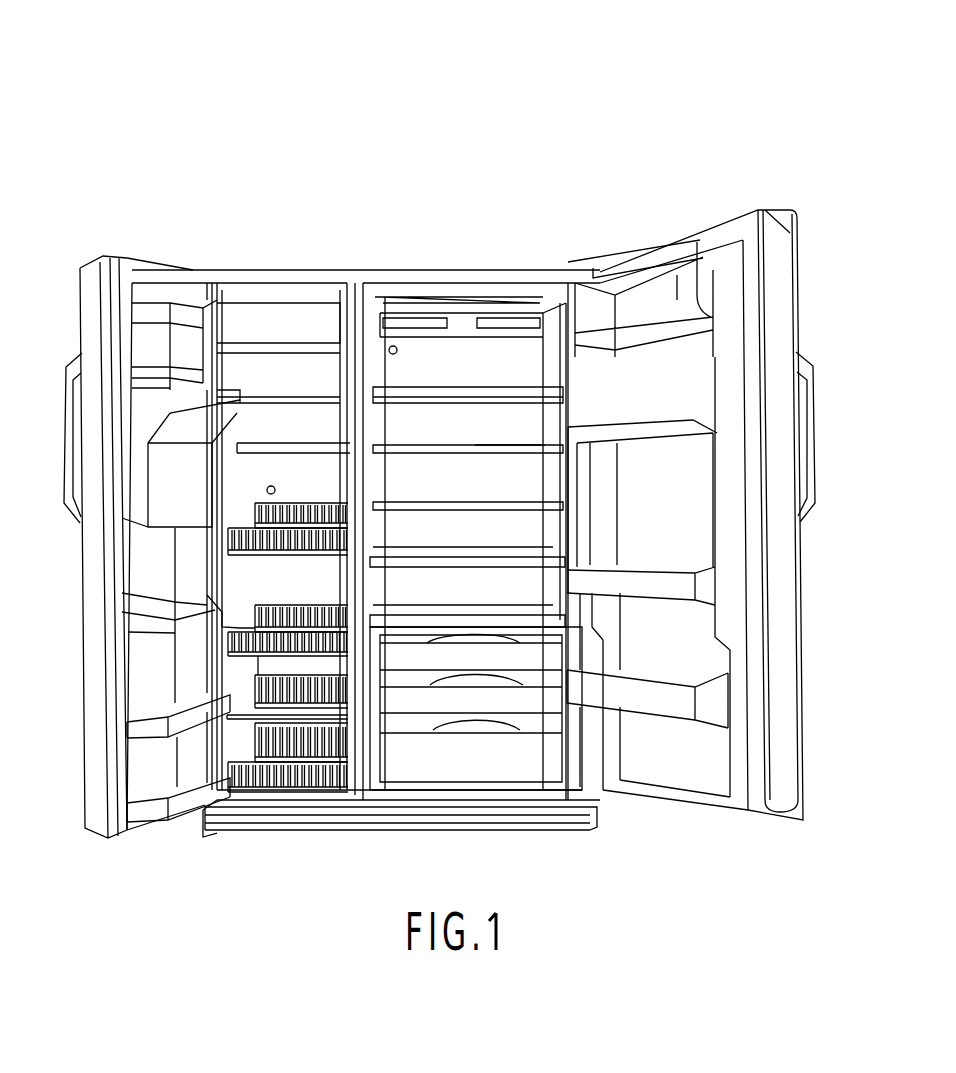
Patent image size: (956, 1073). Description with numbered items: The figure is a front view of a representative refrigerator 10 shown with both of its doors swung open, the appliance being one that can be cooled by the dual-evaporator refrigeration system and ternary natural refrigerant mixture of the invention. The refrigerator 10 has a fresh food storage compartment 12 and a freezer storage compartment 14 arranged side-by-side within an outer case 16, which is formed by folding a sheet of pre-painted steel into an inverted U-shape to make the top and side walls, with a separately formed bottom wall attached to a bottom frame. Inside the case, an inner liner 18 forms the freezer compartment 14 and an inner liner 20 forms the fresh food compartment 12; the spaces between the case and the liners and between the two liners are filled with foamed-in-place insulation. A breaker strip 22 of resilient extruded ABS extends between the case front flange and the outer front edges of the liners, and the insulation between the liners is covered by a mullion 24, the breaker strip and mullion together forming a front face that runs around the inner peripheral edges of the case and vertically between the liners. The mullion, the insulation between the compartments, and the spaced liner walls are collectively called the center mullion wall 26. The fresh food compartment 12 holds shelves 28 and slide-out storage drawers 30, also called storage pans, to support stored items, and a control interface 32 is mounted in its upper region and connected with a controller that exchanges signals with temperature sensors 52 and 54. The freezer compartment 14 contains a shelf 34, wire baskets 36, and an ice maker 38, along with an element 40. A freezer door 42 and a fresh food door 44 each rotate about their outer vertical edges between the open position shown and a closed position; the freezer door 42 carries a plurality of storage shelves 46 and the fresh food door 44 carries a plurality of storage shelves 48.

The refrigerator 10 is at (568, 128).
The fresh food storage compartment 12 is at (547, 292).
The freezer storage compartment 14 is at (316, 313).
The outer case 16 is at (420, 268).
The inner liner 18 is at (480, 290).
The inner liner 20 is at (268, 293).
The breaker strip 22 is at (523, 270).
The mullion 24 is at (360, 780).
The center mullion wall 26 is at (378, 478).
The shelves 28 is at (483, 450).
The slide-out storage drawers 30 is at (513, 752).
The control interface 32 is at (500, 312).
The shelf 34 is at (272, 455).
The wire baskets 36 is at (212, 523).
The ice maker 38 is at (287, 372).
The freezer baskets 40 is at (287, 647).
The freezer door 42 is at (148, 258).
The fresh food door 44 is at (800, 284).
The storage shelves 46 is at (123, 650).
The storage shelves 48 is at (652, 578).
The temperature sensor 52 is at (397, 352).
The temperature sensor 54 is at (274, 497).